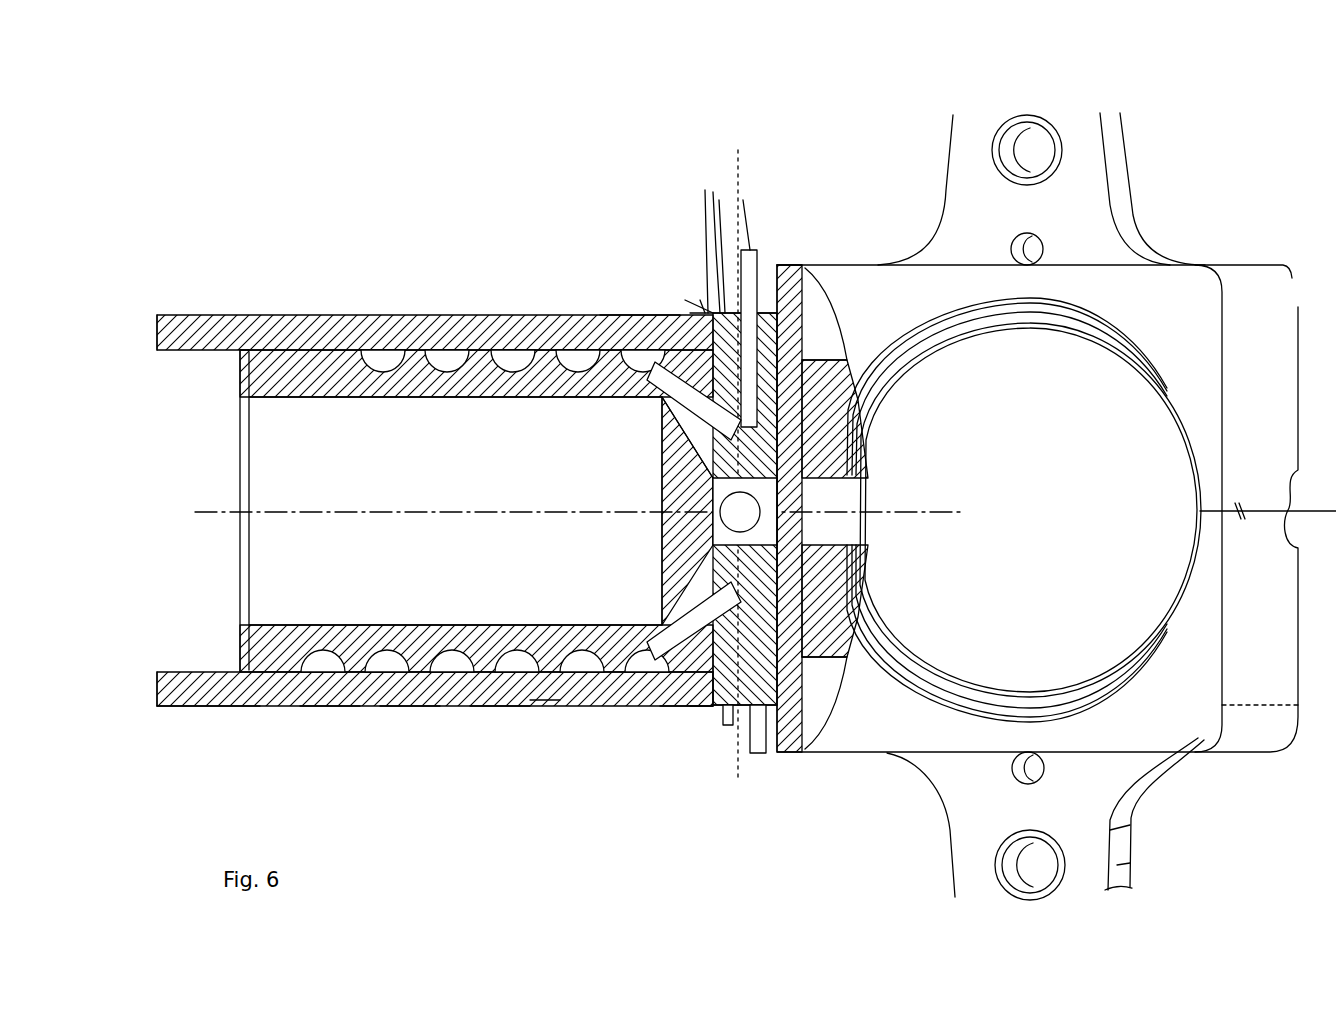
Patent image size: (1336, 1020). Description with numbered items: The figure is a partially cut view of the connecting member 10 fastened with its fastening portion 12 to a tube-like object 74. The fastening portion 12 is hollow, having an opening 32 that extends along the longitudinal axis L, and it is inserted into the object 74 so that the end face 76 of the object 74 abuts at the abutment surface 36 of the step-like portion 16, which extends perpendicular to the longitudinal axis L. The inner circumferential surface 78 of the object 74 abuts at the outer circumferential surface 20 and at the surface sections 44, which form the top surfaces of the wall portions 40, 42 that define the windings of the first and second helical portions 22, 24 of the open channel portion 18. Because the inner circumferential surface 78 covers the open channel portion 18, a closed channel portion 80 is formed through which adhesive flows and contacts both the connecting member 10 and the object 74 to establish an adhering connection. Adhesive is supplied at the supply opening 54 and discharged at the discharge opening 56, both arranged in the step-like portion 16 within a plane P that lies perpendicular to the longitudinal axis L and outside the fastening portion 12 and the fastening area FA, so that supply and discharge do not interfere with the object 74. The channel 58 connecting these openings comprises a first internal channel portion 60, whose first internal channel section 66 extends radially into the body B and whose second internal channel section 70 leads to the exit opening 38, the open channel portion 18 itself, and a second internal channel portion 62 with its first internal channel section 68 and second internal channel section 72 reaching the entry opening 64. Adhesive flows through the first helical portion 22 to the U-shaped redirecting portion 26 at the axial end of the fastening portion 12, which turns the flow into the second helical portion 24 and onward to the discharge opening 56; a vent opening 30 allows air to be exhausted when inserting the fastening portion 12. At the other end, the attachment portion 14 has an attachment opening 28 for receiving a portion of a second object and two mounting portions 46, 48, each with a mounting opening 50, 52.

The connecting member 10 is at (1190, 122).
The fastening portion 12 is at (552, 176).
The attachment portion 14 is at (1292, 168).
The step-like portion 16 is at (779, 238).
The open channel portion 18 is at (551, 294).
The outer circumferential surface 20 is at (298, 315).
The first helical portion 22 is at (378, 706).
The second helical portion 24 is at (292, 706).
The redirecting portion 26 is at (315, 706).
The attachment opening 28 is at (1150, 350).
The vent opening 30 is at (715, 500).
The opening 32 is at (265, 490).
The abutment surface 36 is at (700, 310).
The exit opening 38 is at (643, 315).
The wall portion 40 is at (350, 706).
The wall portion 42 is at (420, 706).
The surface section 44 is at (397, 318).
The mounting portion 46 is at (952, 228).
The mounting portion 48 is at (1127, 840).
The mounting opening 50 is at (1000, 128).
The mounting opening 52 is at (1107, 887).
The supply opening 54 is at (751, 309).
The discharge opening 56 is at (755, 705).
The channel 58 is at (613, 232).
The first internal channel portion 60 is at (690, 302).
The second internal channel portion 62 is at (705, 706).
The entry opening 64 is at (680, 706).
The first internal channel section 66 is at (709, 237).
The first internal channel section 68 is at (730, 705).
The second internal channel section 70 is at (660, 432).
The second internal channel section 72 is at (730, 585).
The tube-like object 74 is at (180, 315).
The end face 76 is at (700, 313).
The inner circumferential surface 78 is at (212, 350).
The closed channel portion 80 is at (498, 706).
The body B is at (783, 273).
The fastening area FA is at (545, 706).
The longitudinal axis L is at (750, 506).
The plane P is at (731, 451).